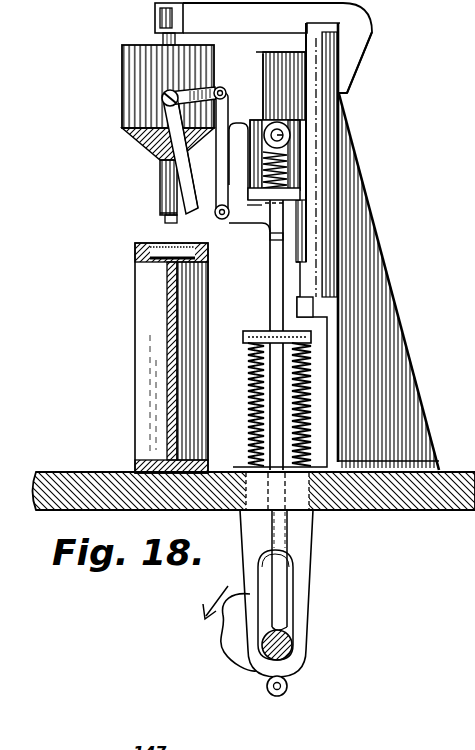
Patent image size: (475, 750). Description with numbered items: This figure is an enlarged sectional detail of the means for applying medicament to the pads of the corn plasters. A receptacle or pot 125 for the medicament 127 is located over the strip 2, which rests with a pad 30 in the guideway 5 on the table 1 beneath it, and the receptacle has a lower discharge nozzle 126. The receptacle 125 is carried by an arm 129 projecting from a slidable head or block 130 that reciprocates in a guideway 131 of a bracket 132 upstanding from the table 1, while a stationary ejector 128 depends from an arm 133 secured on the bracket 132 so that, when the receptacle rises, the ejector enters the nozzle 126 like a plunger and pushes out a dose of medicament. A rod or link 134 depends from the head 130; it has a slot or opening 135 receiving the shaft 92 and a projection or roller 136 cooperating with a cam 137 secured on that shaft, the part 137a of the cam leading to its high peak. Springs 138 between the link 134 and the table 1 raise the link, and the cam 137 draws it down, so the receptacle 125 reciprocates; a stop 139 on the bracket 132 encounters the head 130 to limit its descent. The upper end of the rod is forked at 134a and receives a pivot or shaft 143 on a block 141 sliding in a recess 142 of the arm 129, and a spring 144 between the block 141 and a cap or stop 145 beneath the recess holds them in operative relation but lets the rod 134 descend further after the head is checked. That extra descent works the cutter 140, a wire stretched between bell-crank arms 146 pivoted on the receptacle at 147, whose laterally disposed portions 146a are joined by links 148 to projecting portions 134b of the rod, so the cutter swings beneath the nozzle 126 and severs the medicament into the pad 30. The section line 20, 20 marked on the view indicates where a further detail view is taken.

The table 1 is at (444, 511).
The strip 2 is at (148, 264).
The guideway 5 is at (147, 305).
The section line 20 is at (277, 118).
The pad 30 is at (140, 258).
The shaft 92 is at (290, 652).
The receptacle or pot 125 is at (192, 75).
The discharge nozzle 126 is at (165, 186).
The medicament 127 is at (180, 217).
The ejector 128 is at (164, 40).
The arm 129 is at (286, 52).
The head or block 130 is at (300, 178).
The guideway 131 is at (318, 77).
The bracket 132 is at (330, 251).
The arm 133 is at (263, 48).
The rod or link 134 is at (273, 266).
The forked upper end 134a is at (277, 211).
The projecting portions 134b is at (236, 208).
The slot or opening 135 is at (292, 588).
The projection or roller 136 is at (277, 697).
The cam 137 is at (248, 662).
The cam part 137a is at (222, 624).
The springs 138 is at (256, 413).
The stop 139 is at (311, 308).
The cutter 140 is at (136, 245).
The block 141 is at (288, 128).
The recess 142 is at (296, 166).
The pivot or shaft 143 is at (292, 140).
The spring 144 is at (242, 179).
The cap or stop 145 is at (262, 226).
The arms 146 is at (172, 118).
The laterally disposed portions 146a is at (190, 82).
The pivot 147 is at (162, 97).
The links 148 is at (264, 104).